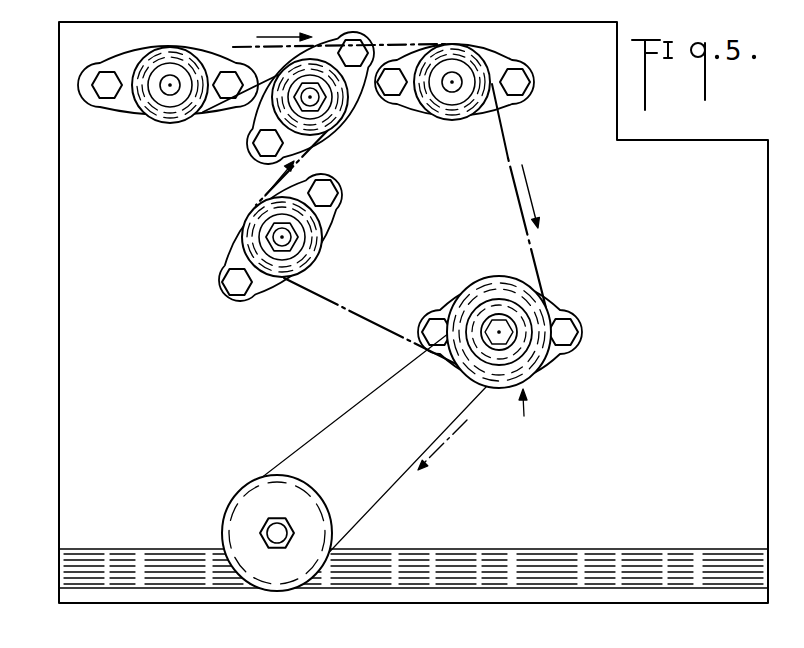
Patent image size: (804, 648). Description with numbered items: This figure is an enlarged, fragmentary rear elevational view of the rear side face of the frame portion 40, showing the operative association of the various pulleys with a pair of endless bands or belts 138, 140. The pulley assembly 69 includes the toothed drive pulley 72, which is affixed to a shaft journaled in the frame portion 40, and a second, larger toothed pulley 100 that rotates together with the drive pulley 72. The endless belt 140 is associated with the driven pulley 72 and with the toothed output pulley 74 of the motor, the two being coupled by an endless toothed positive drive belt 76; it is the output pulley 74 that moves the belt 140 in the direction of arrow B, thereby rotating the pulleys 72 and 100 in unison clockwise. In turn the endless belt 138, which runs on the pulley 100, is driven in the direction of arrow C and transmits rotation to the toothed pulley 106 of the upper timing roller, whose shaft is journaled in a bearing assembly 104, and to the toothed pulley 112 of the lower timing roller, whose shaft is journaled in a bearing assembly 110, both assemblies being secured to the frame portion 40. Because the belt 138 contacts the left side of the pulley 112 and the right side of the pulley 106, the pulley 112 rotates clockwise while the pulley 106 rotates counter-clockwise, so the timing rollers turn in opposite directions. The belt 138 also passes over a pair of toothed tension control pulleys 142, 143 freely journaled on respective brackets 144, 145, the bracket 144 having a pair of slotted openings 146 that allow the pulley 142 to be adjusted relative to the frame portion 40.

The frame portion 40 is at (700, 226).
The pulley assembly 69 is at (523, 414).
The drive pulley 72 is at (494, 300).
The output pulley 74 is at (256, 481).
The positive drive belt 76 is at (344, 411).
The toothed pulley 100 is at (506, 322).
The bearing assembly 104 is at (261, 116).
The toothed pulley 106 is at (348, 118).
The bearing assembly 110 is at (330, 217).
The toothed pulley 112 is at (315, 257).
The endless belt 138 is at (536, 262).
The endless belt 140 is at (391, 488).
The tension control pulley 142 is at (160, 124).
The tension control pulley 143 is at (472, 46).
The bracket 144 is at (116, 106).
The bracket 145 is at (523, 60).
The slotted openings 146 is at (92, 87).
The arrow B is at (443, 443).
The arrow C is at (528, 188).